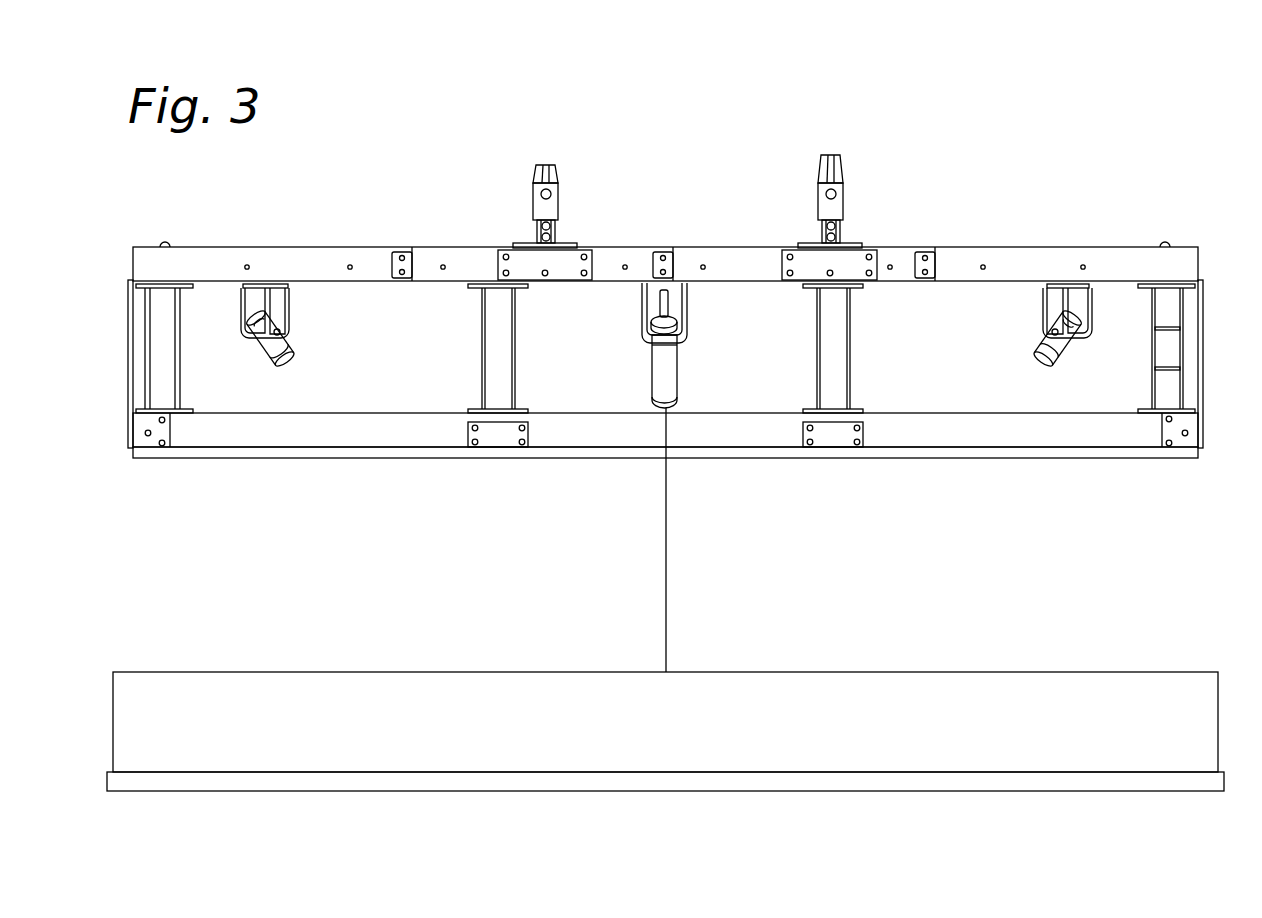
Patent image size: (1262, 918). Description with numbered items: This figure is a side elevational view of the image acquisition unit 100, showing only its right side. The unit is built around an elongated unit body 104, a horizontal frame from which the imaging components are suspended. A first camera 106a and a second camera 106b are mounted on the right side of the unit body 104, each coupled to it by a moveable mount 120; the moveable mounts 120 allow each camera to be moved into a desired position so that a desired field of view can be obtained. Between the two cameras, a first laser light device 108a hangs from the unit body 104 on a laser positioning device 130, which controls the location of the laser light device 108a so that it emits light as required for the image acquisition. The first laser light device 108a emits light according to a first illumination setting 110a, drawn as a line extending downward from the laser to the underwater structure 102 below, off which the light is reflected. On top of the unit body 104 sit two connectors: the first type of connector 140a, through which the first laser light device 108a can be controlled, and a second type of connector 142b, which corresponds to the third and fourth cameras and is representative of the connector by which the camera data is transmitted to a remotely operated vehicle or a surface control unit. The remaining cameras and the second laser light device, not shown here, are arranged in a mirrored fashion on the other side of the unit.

The image acquisition unit 100 is at (1103, 158).
The underwater structure 102 is at (1148, 685).
The unit body 104 is at (752, 267).
The first camera 106a is at (272, 348).
The second camera 106b is at (1053, 347).
The first laser light device 108a is at (658, 370).
The first illumination setting 110a is at (667, 543).
The moveable mount 120 is at (280, 297).
The laser positioning device 130 is at (687, 248).
The first type of connector 140a is at (543, 165).
The second type of connector 142b is at (830, 155).